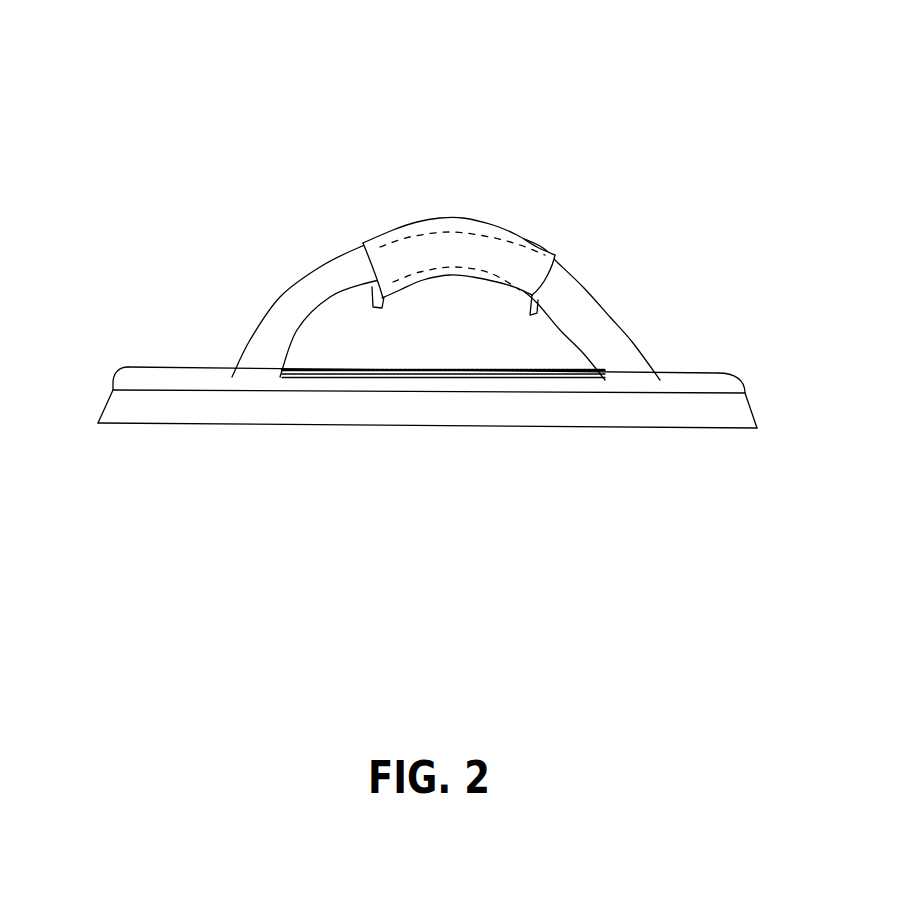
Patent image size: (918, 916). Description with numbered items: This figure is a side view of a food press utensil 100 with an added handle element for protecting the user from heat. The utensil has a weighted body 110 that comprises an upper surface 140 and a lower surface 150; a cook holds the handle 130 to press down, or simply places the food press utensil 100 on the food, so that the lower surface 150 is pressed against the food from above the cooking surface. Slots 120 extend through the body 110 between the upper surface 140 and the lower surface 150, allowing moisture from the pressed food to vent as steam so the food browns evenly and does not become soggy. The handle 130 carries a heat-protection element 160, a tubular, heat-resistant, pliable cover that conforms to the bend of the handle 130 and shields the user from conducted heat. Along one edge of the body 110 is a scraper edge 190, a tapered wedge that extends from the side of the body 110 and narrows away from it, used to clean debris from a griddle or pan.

The food press utensil 100 is at (265, 108).
The body 110 is at (128, 380).
The slots 120 is at (357, 375).
The handle 130 is at (580, 298).
The upper surface 140 is at (715, 383).
The lower surface 150 is at (713, 428).
The heat-protection element 160 is at (495, 242).
The scraper edge 190 is at (433, 427).